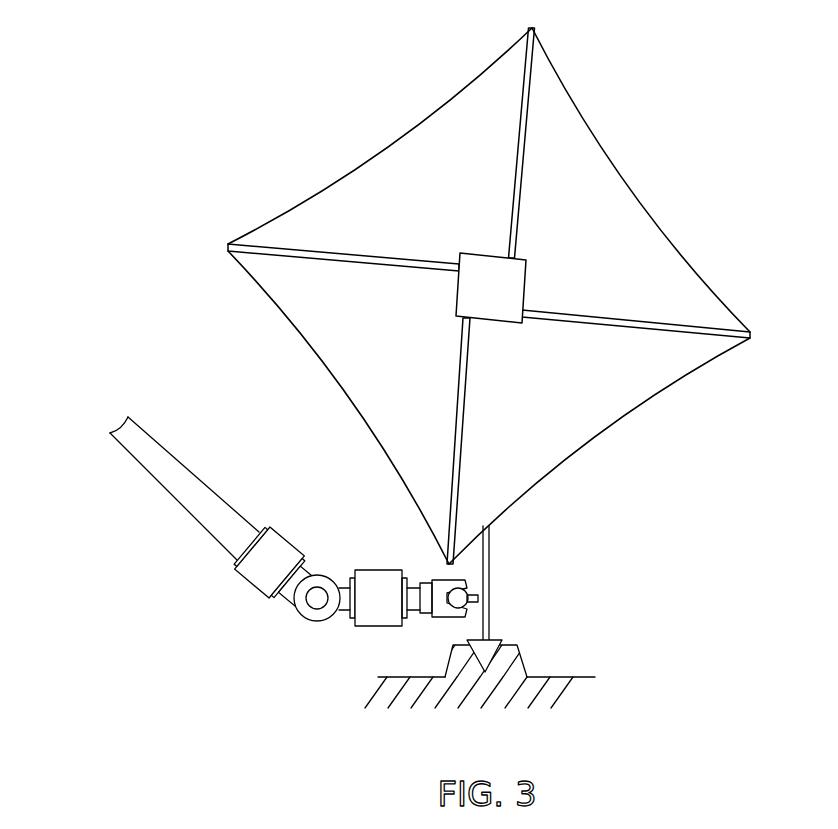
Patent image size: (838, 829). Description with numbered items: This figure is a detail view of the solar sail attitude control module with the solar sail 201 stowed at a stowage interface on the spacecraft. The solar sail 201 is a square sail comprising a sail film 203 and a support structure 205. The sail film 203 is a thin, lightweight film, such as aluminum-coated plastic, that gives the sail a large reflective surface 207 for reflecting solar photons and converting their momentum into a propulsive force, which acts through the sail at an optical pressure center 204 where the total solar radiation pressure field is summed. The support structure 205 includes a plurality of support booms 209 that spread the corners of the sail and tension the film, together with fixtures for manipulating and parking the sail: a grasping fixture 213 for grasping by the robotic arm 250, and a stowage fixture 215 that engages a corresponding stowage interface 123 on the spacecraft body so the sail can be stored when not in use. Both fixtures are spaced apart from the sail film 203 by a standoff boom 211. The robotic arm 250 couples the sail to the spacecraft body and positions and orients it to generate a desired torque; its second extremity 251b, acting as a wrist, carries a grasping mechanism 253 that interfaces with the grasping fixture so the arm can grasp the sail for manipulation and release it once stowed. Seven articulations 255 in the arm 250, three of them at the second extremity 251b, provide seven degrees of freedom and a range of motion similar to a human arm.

The solar sail 201 is at (726, 138).
The sail film 203 is at (351, 170).
The optical pressure center 204 is at (490, 283).
The support structure 205 is at (682, 337).
The reflective surface 207 is at (645, 291).
The support booms 209 is at (297, 260).
The standoff boom 211 is at (489, 539).
The grasping fixture 213 is at (462, 601).
The stowage fixture 215 is at (487, 655).
The stowage interface 123 is at (467, 662).
The robotic arm 250 is at (142, 452).
The second extremity 251b is at (385, 572).
The grasping mechanism 253 is at (445, 585).
The articulations 255 is at (375, 605).